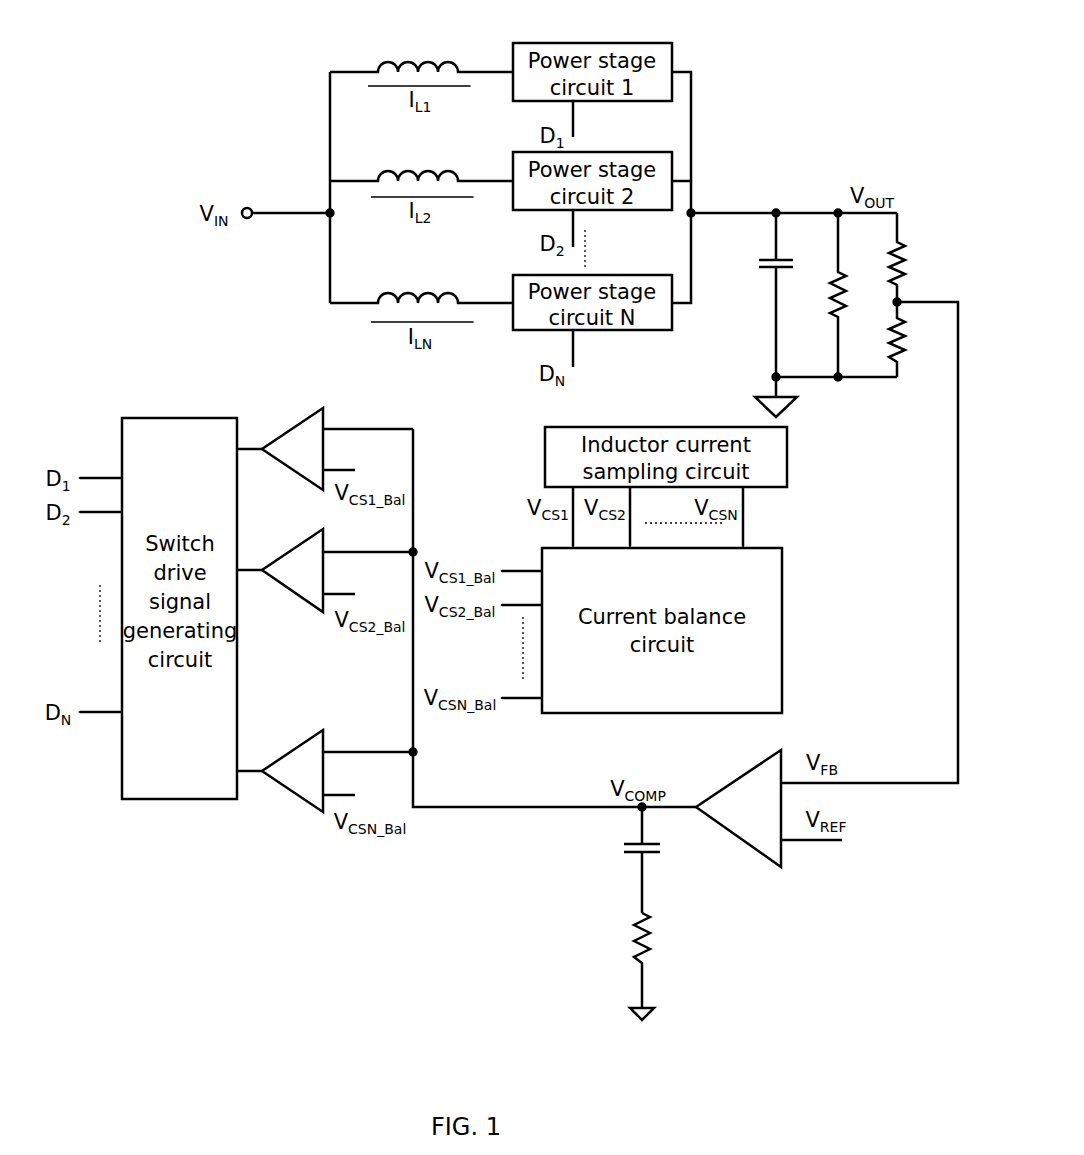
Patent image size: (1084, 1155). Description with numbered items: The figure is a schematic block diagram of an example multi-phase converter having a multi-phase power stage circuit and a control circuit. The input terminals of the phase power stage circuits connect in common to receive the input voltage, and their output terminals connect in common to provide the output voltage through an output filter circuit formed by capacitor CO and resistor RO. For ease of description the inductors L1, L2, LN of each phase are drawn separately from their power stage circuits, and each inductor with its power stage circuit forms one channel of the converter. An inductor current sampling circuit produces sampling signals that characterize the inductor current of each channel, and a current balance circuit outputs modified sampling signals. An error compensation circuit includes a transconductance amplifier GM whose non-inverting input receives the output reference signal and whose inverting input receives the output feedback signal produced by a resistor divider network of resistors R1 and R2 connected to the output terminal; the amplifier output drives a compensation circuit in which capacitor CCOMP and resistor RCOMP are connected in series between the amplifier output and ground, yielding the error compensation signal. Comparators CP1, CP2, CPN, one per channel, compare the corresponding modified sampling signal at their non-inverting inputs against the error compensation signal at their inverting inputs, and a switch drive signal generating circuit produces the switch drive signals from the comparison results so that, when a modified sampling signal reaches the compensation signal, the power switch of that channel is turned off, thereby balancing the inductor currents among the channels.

The inductor L1 is at (421, 53).
The inductor L2 is at (421, 162).
The inductor LN is at (421, 284).
The capacitor CO is at (758, 295).
The resistor RO is at (825, 295).
The resistor R1 is at (914, 257).
The resistor R2 is at (914, 339).
The comparator CP1 is at (325, 440).
The comparator CP2 is at (325, 561).
The comparator CPN is at (325, 761).
The transconductance amplifier GM is at (769, 805).
The capacitor CCOMP is at (610, 860).
The resistor RCOMP is at (608, 960).